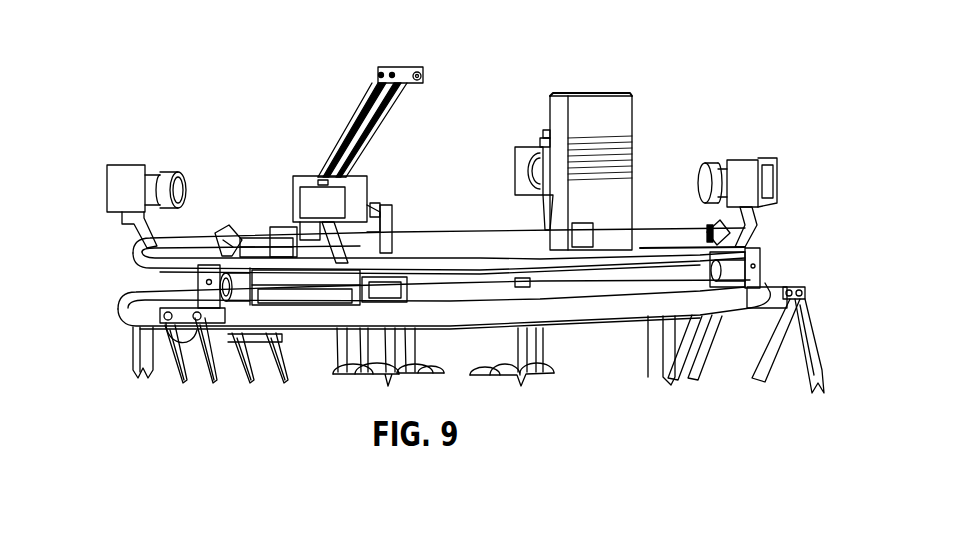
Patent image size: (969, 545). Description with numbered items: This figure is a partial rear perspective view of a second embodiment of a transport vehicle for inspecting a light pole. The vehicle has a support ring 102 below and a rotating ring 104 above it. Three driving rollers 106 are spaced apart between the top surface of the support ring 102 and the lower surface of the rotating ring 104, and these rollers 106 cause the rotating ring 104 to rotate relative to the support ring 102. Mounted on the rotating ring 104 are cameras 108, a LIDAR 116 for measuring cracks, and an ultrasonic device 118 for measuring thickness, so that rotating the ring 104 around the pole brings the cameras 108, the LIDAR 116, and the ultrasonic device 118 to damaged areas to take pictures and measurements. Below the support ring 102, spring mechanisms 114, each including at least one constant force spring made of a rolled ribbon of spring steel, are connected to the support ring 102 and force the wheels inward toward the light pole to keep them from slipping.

The support ring 102 is at (452, 322).
The rotating ring 104 is at (543, 260).
The driving rollers 106 is at (175, 283).
The cameras 108 is at (137, 163).
The spring mechanism 114 is at (162, 383).
The LIDAR 116 is at (622, 95).
The ultrasonic device 118 is at (390, 67).